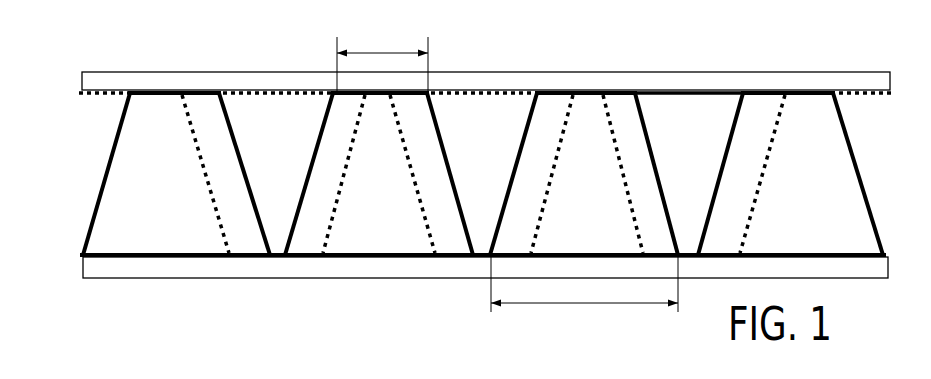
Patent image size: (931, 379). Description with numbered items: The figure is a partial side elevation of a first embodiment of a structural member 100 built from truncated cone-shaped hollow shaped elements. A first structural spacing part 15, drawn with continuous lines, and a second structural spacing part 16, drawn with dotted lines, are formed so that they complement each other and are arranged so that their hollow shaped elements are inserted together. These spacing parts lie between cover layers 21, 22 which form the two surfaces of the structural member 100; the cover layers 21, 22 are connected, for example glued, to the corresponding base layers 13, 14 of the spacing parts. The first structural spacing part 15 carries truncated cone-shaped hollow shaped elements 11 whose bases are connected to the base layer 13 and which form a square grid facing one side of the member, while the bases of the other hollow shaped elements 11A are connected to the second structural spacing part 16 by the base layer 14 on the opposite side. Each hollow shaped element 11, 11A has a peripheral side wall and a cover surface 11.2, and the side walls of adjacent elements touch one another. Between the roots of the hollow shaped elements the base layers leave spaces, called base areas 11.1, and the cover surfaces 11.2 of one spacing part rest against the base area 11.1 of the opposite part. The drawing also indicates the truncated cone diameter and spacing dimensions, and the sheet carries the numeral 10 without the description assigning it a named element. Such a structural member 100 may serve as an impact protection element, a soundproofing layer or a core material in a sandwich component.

The structural member 100 is at (93, 185).
The core structure 10 is at (485, 318).
The cover layer 22 is at (208, 80).
The cover layer 21 is at (270, 268).
The base layer 14 is at (502, 92).
The second structural spacing part 16 is at (692, 84).
The first structural spacing part 15 is at (416, 264).
The base layer 13 is at (481, 262).
The hollow shaped element 11A is at (509, 170).
The hollow shaped element 11 is at (608, 206).
The base area 11.1 is at (721, 155).
The cover surface 11.2 is at (769, 129).